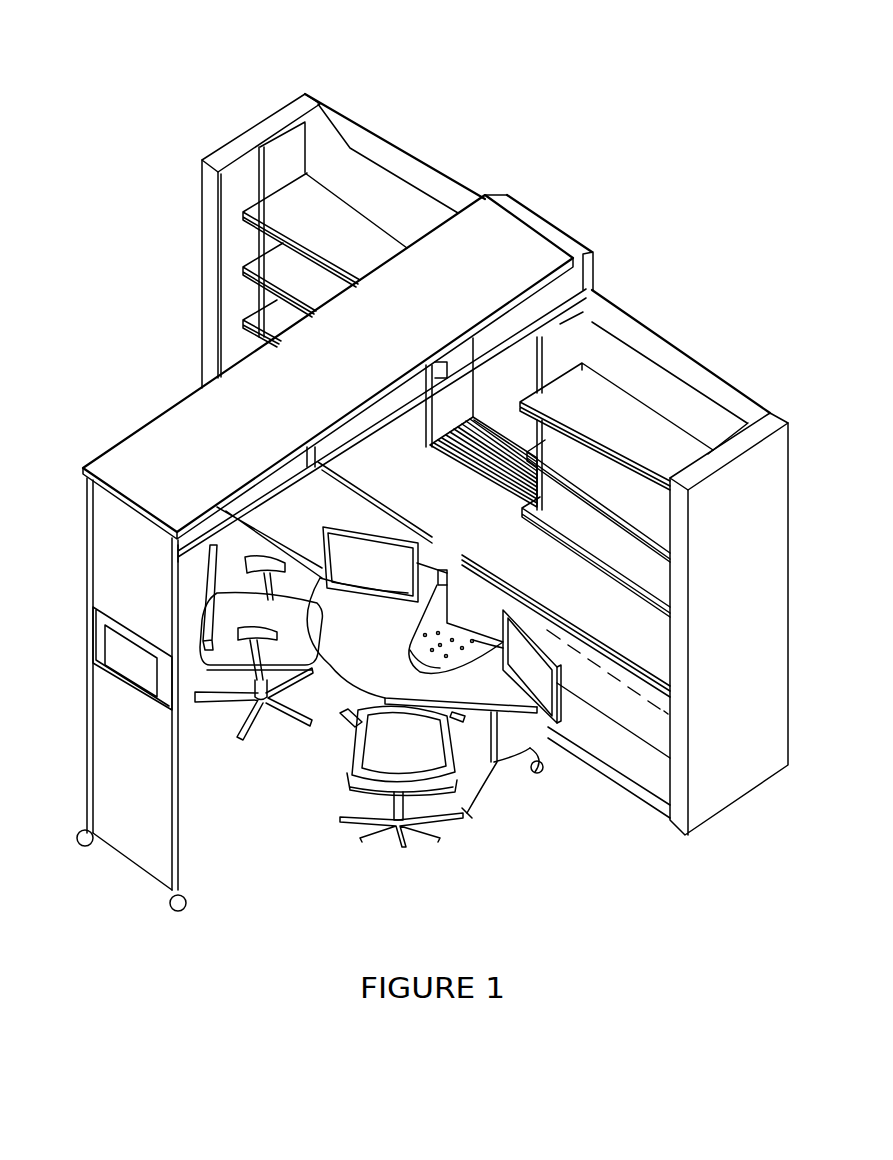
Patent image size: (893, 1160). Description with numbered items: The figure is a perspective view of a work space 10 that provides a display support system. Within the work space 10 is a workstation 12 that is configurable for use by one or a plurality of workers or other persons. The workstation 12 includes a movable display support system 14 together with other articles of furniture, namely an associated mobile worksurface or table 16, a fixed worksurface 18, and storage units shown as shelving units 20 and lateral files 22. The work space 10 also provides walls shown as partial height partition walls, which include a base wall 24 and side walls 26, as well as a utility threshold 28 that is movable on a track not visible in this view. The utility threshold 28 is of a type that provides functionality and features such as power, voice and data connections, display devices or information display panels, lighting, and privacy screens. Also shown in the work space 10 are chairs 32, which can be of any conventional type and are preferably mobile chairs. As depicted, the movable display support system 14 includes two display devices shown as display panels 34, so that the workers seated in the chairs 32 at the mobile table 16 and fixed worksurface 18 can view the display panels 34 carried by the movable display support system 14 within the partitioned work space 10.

The work space 10 is at (104, 108).
The workstation 12 is at (262, 856).
The movable display support system 14 is at (462, 674).
The mobile worksurface or table 16 is at (375, 660).
The fixed worksurface 18 is at (632, 652).
The shelving units 20 is at (607, 405).
The lateral files 22 is at (643, 777).
The base wall 24 is at (703, 377).
The side walls 26 is at (772, 430).
The utility threshold 28 is at (445, 262).
The chairs 32 is at (217, 660).
The display panels 34 is at (365, 572).